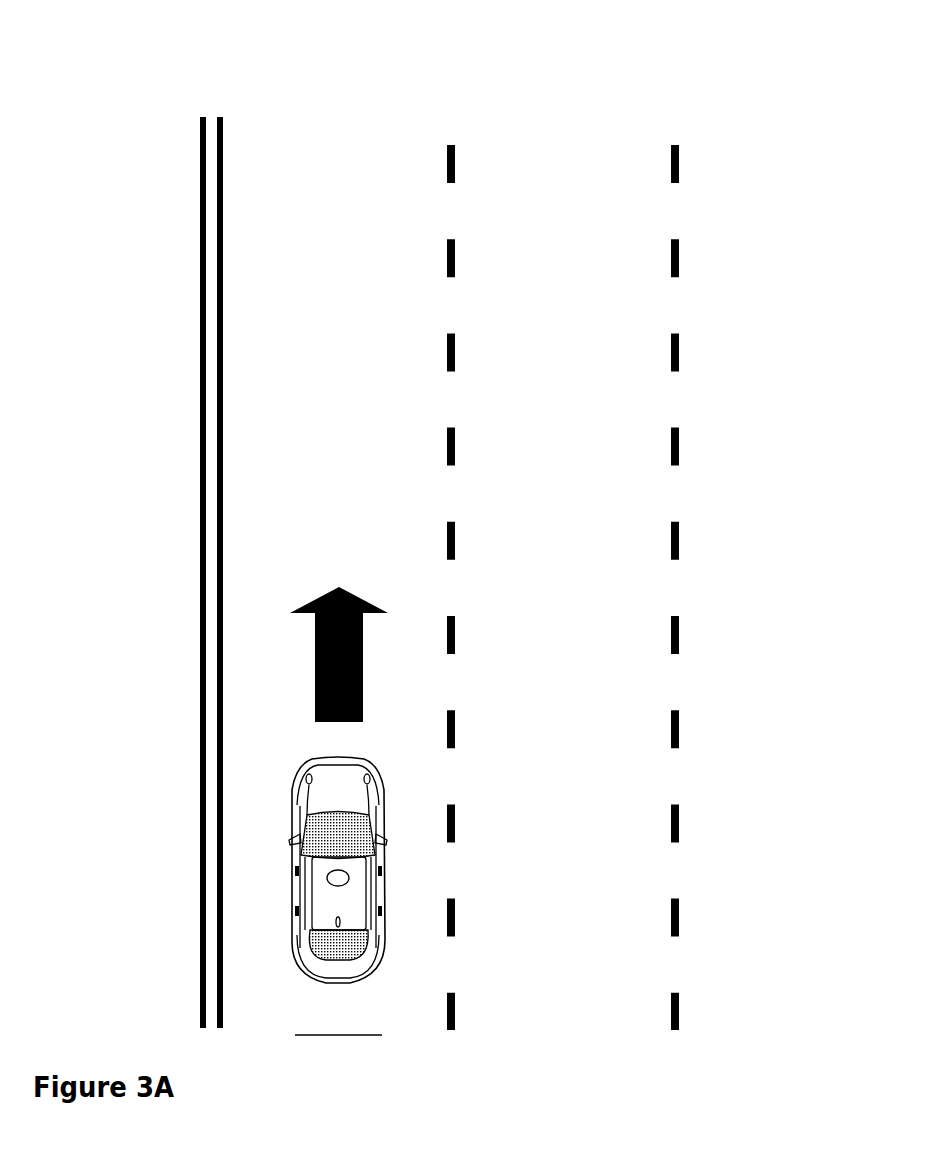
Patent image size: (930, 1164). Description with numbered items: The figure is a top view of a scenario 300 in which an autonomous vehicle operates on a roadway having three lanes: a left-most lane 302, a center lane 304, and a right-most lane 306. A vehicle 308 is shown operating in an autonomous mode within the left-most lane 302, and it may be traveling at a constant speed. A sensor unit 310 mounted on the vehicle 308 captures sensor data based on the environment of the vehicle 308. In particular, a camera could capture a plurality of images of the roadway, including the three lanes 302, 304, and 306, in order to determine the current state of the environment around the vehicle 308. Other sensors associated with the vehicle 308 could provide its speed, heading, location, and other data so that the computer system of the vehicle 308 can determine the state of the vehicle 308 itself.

The scenario 300 is at (157, 97).
The left-most lane 302 is at (332, 84).
The center lane 304 is at (560, 84).
The right-most lane 306 is at (762, 84).
The vehicle 308 is at (294, 797).
The sensor unit 310 is at (327, 880).